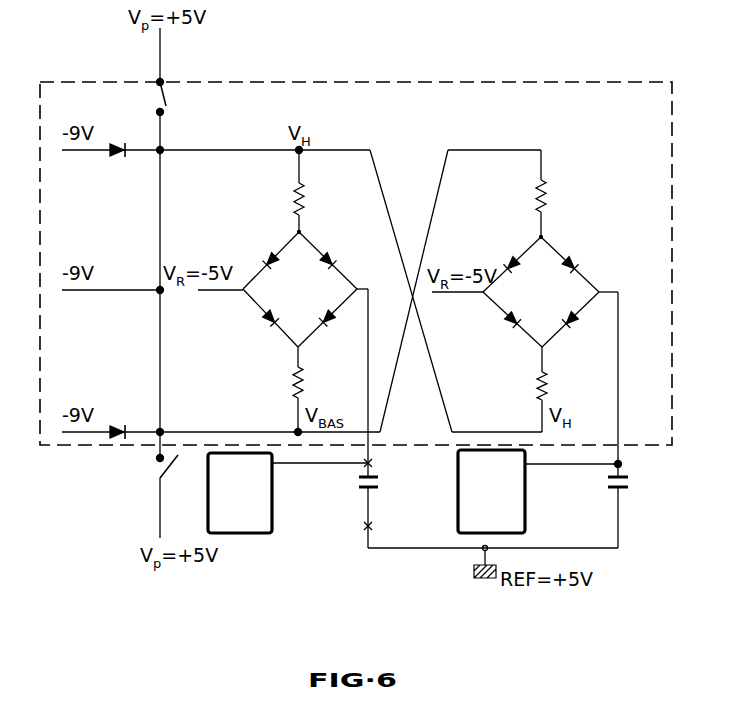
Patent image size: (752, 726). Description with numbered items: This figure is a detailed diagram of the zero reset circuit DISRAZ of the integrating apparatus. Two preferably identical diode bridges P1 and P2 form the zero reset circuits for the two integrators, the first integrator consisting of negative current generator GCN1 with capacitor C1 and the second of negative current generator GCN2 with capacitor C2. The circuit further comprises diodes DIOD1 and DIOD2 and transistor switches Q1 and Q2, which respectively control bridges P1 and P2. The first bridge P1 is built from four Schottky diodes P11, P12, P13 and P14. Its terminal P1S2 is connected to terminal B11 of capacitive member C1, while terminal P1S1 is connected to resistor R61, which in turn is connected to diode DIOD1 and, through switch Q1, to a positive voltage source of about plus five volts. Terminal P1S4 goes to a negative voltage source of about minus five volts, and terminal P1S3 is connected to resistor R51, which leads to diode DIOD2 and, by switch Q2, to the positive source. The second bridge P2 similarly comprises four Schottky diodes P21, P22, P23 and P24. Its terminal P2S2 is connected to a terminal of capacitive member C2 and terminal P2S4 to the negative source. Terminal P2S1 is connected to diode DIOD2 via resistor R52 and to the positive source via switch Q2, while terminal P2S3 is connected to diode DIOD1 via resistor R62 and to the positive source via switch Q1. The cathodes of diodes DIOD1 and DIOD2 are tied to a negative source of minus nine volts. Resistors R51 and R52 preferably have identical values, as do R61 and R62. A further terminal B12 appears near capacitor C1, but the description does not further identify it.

The zero reset circuit DISRAZ is at (470, 80).
The transistor switch Q1 is at (175, 97).
The transistor switch Q2 is at (175, 497).
The diode DIOD1 is at (112, 157).
The diode DIOD2 is at (112, 437).
The resistor R61 is at (294, 192).
The resistor R51 is at (274, 389).
The resistor R52 is at (536, 192).
The resistor R62 is at (522, 389).
The Schottky diode P11 is at (271, 261).
The Schottky diode P12 is at (330, 264).
The Schottky diode P13 is at (327, 318).
The Schottky diode P14 is at (267, 321).
The Schottky diode P21 is at (532, 270).
The Schottky diode P22 is at (578, 266).
The Schottky diode P23 is at (568, 319).
The Schottky diode P24 is at (510, 324).
The first diode bridge P1 is at (310, 238).
The second diode bridge P2 is at (552, 238).
The bridge terminal P1S1 is at (272, 256).
The bridge terminal P1S2 is at (381, 277).
The bridge terminal P1S3 is at (326, 355).
The bridge terminal P1S4 is at (220, 307).
The bridge terminal P2S1 is at (532, 254).
The bridge terminal P2S2 is at (622, 279).
The bridge terminal P2S3 is at (568, 357).
The bridge terminal P2S4 is at (457, 309).
The negative current generator GCN1 is at (288, 493).
The negative current generator GCN2 is at (538, 491).
The capacitor C1 is at (372, 490).
The capacitor C2 is at (624, 488).
The terminal of capacitive member B11 is at (390, 479).
The terminal B12 is at (360, 527).